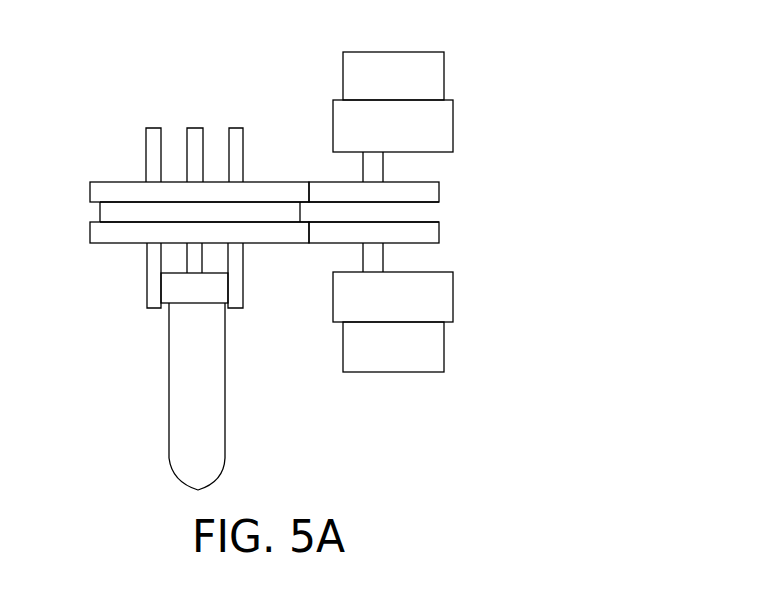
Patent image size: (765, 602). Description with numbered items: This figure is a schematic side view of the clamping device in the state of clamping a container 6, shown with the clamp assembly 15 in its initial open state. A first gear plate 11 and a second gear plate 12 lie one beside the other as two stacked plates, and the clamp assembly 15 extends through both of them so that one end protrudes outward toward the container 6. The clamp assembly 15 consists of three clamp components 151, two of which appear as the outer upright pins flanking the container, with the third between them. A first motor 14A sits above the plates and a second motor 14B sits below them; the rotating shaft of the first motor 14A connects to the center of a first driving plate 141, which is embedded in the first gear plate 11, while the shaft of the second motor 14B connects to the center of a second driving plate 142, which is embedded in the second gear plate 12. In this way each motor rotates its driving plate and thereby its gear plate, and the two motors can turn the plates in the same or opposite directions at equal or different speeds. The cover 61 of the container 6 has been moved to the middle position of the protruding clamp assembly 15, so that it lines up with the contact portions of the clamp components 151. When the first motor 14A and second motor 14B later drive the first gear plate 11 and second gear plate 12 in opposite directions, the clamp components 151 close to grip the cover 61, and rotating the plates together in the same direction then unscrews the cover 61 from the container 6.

The container 6 is at (178, 438).
The cover 61 is at (182, 292).
The first gear plate 11 is at (107, 193).
The second gear plate 12 is at (107, 232).
The first motor 14A is at (391, 59).
The second motor 14B is at (395, 362).
The first driving plate 141 is at (425, 193).
The second driving plate 142 is at (425, 233).
The clamp assembly 15 is at (170, 185).
The clamp component 151 is at (153, 152).